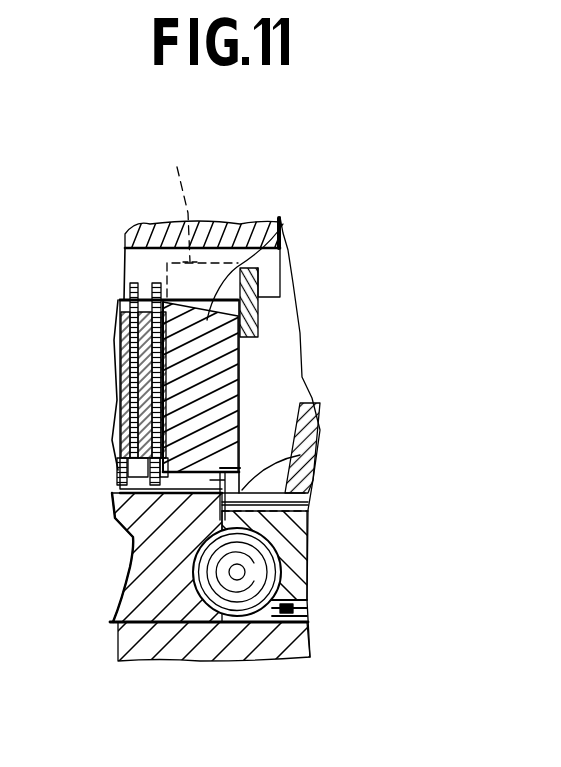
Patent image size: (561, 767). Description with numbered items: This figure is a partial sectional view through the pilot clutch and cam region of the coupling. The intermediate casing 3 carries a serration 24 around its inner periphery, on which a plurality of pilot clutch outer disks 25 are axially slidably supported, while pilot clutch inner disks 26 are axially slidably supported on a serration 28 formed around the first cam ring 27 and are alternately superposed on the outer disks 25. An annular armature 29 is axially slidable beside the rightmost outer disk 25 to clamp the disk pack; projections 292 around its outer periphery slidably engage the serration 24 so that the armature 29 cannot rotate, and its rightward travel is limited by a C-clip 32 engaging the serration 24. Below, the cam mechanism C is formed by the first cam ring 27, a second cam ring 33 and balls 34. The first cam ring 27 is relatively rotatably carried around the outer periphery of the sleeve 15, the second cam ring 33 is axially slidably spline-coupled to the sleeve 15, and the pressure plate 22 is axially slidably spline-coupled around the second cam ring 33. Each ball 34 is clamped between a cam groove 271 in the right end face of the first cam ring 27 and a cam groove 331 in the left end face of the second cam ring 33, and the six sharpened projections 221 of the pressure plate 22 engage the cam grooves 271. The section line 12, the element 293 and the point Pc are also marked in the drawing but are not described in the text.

The intermediate casing 3 is at (173, 218).
The projections 292 is at (176, 198).
The terminal portion 293 is at (279, 233).
The section line XII-XII 12 is at (207, 208).
The C-clip 32 is at (258, 314).
The armature 29 is at (246, 357).
The serration 24 is at (143, 272).
The pilot clutch outer disks 25 is at (120, 335).
The pilot clutch inner disks 26 is at (128, 484).
The serration 28 is at (240, 474).
The first cam ring 27 is at (169, 632).
The cam grooves 271 is at (197, 555).
The pressure plate 22 is at (321, 424).
The projections 221 is at (283, 487).
The second cam ring 33 is at (308, 524).
The cam grooves 331 is at (274, 575).
The balls 34 is at (252, 590).
The cam mechanism C is at (292, 611).
The sleeve 15 is at (218, 652).
The contact point Pc is at (121, 249).